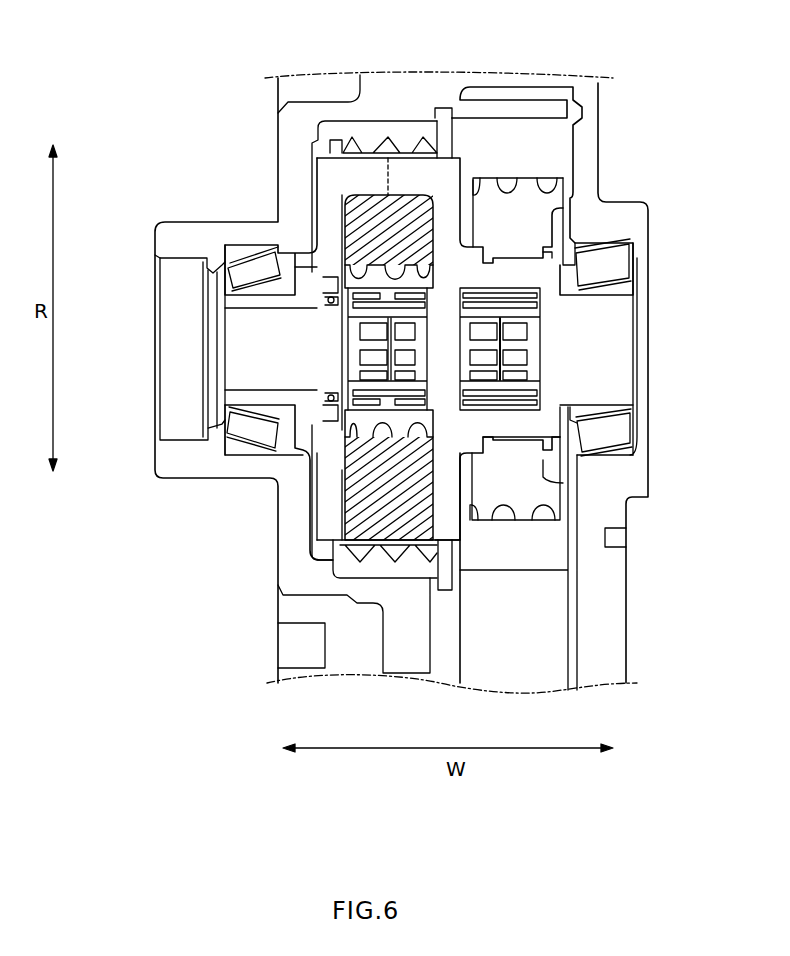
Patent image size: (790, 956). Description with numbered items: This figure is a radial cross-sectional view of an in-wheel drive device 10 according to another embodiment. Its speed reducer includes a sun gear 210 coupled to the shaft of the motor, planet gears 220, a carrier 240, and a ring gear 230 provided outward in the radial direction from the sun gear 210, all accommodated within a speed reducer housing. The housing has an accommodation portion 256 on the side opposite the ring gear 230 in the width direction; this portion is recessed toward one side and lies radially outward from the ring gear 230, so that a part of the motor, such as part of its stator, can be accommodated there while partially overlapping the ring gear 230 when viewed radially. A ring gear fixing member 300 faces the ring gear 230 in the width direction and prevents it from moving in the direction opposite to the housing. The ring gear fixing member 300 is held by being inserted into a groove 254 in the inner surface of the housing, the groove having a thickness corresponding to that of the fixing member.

The in-wheel drive device 10 is at (192, 30).
The sun gear 210 is at (407, 417).
The planet gears 220 is at (405, 486).
The ring gear 230 is at (403, 128).
The carrier 240 is at (443, 175).
The groove 254 is at (447, 105).
The accommodation portion 256 is at (350, 90).
The ring gear fixing member 300 is at (447, 125).